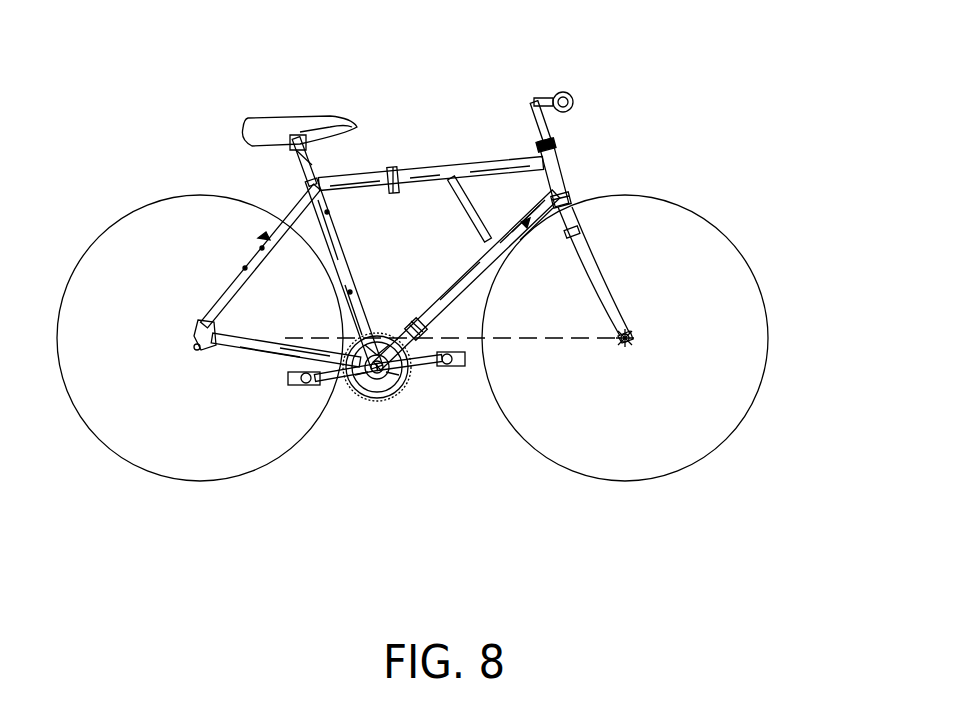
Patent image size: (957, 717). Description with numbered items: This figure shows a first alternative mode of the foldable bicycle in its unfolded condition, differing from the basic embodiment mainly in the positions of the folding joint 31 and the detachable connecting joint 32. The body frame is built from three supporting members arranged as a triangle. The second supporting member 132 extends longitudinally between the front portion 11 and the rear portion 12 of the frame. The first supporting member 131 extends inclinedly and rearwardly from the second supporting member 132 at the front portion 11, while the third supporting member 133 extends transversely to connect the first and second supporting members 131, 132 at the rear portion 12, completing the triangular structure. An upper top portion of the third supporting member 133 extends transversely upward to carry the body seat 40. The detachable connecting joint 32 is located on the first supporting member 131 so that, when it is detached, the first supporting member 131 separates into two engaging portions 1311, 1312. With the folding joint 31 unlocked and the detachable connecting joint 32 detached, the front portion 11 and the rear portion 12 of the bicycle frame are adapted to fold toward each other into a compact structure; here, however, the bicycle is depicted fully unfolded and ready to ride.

The front portion 11 is at (742, 207).
The rear portion 12 is at (148, 163).
The folding joint 31 is at (388, 128).
The detachable connecting joint 32 is at (427, 345).
The body seat 40 is at (292, 125).
The first supporting member 131 is at (470, 275).
The second supporting member 132 is at (498, 163).
The third supporting member 133 is at (342, 277).
The engaging portion 1311 is at (530, 216).
The engaging portion 1312 is at (410, 345).